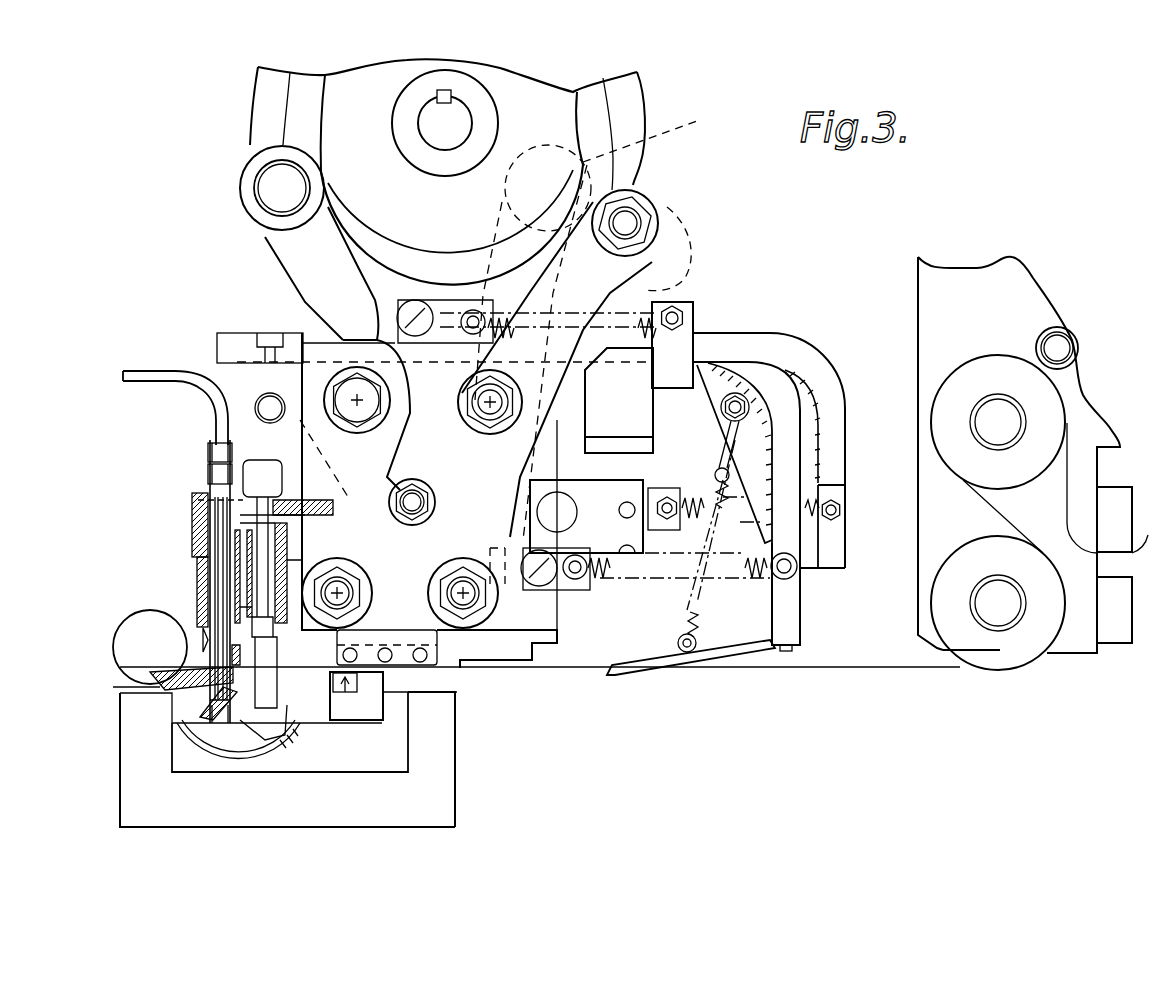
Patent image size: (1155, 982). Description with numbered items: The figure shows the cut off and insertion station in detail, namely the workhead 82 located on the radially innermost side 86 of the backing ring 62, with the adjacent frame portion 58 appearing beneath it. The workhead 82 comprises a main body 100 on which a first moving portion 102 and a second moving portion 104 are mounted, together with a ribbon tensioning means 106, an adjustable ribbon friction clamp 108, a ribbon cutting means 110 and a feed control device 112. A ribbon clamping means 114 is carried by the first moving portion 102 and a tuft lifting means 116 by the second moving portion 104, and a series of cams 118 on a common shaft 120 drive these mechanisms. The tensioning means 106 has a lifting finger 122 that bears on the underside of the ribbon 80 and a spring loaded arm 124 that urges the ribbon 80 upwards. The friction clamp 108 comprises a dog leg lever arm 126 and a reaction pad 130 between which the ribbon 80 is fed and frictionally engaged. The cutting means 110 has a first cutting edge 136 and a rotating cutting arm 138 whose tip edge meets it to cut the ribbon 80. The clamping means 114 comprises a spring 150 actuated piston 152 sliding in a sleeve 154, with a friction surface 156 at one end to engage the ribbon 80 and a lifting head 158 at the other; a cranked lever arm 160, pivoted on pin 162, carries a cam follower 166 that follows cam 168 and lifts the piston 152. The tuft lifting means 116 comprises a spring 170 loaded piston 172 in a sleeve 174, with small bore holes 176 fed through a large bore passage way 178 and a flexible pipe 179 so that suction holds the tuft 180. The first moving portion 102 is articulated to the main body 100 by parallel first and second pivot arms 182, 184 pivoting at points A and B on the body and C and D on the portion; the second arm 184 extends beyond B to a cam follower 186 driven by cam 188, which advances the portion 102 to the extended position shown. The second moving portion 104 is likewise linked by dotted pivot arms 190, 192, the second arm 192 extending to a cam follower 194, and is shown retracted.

The cams 118 is at (648, 92).
The common shaft 120 is at (474, 127).
The cam follower 194 is at (684, 140).
The cam 188 is at (592, 178).
The cam 168 is at (316, 103).
The cam follower 166 is at (268, 150).
The cranked lever arm 160 is at (278, 238).
The cam follower 186 is at (657, 209).
The workhead 82 is at (670, 231).
The second pivot arm 184 is at (640, 272).
The first pivot arm 190 is at (258, 345).
The first pivot arm 182 is at (240, 460).
The pivot point A is at (358, 396).
The pivot point B is at (590, 396).
The pin 162 is at (412, 525).
The first moving portion 102 is at (540, 612).
The pivot point C is at (374, 596).
The pivot point D is at (445, 608).
The reaction pad 130 is at (405, 672).
The second moving portion 104 is at (605, 497).
The main body 100 is at (573, 427).
The second pivot arm 192 is at (572, 464).
The spring loaded arm 124 is at (676, 628).
The lifting finger 122 is at (750, 652).
The ribbon tensioning means 106 is at (680, 672).
The ribbon 80 is at (940, 669).
The feed control device 112 is at (1075, 612).
The flexible pipe 179 is at (163, 356).
The lifting head 158 is at (233, 446).
The ribbon clamping means 114 is at (237, 480).
The sleeve 154 is at (240, 495).
The spring 150 is at (197, 512).
The tuft lifting means 116 is at (195, 528).
The spring 170 is at (233, 575).
The sleeve 174 is at (246, 605).
The piston 152 is at (237, 622).
The piston 172 is at (232, 606).
The large bore passage way 178 is at (230, 632).
The radially innermost side 86 is at (173, 650).
The tuft 180 is at (175, 695).
The cutting arm 138 is at (200, 712).
The backing ring 62 is at (150, 733).
The base 58 is at (150, 745).
The ribbon cutting means 110 is at (175, 762).
The dog leg lever arm 126 is at (345, 676).
The adjustable ribbon friction clamp 108 is at (345, 694).
The first cutting edge 136 is at (248, 700).
The friction surface 156 is at (295, 725).
The small bore holes 176 is at (220, 724).